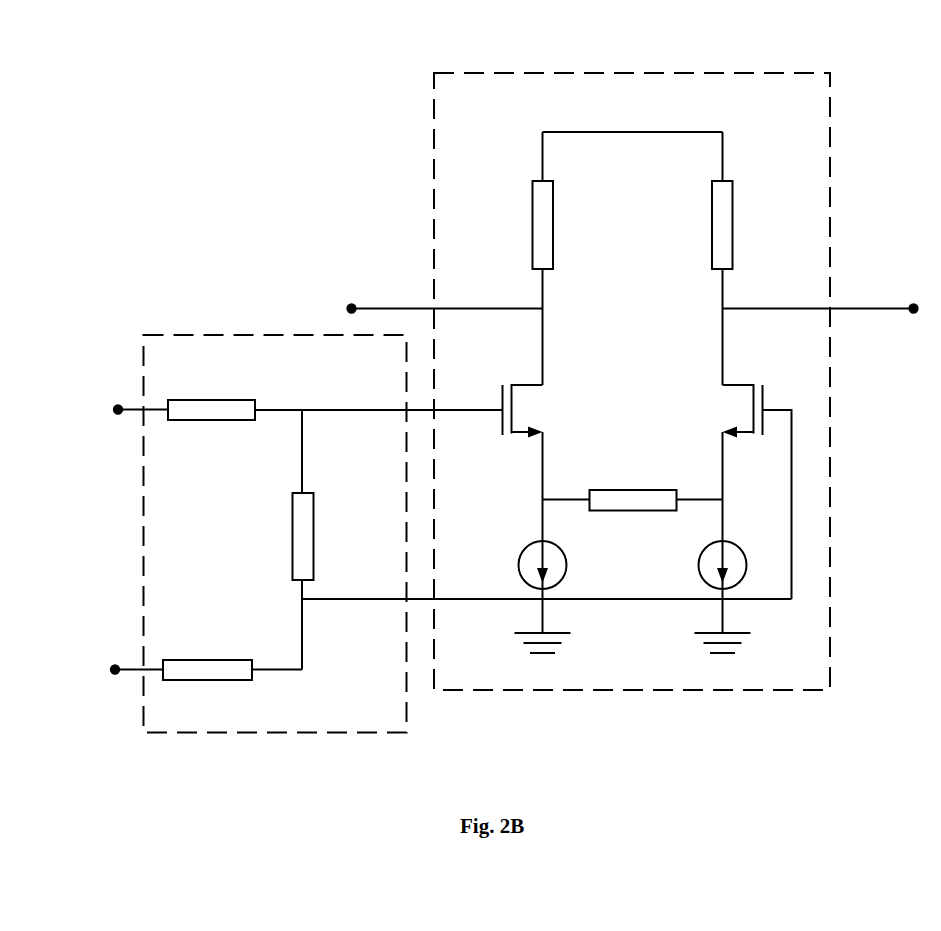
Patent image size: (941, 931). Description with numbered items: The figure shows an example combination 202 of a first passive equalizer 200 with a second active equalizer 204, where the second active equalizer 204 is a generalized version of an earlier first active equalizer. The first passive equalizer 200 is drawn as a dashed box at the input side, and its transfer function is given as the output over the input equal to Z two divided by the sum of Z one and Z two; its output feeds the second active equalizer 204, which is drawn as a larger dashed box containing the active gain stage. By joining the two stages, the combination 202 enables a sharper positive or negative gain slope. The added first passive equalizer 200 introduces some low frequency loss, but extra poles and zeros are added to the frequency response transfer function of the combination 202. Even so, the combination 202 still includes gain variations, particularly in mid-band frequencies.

The combination 202 is at (252, 112).
The first passive equalizer 200 is at (285, 534).
The second active equalizer 204 is at (632, 381).